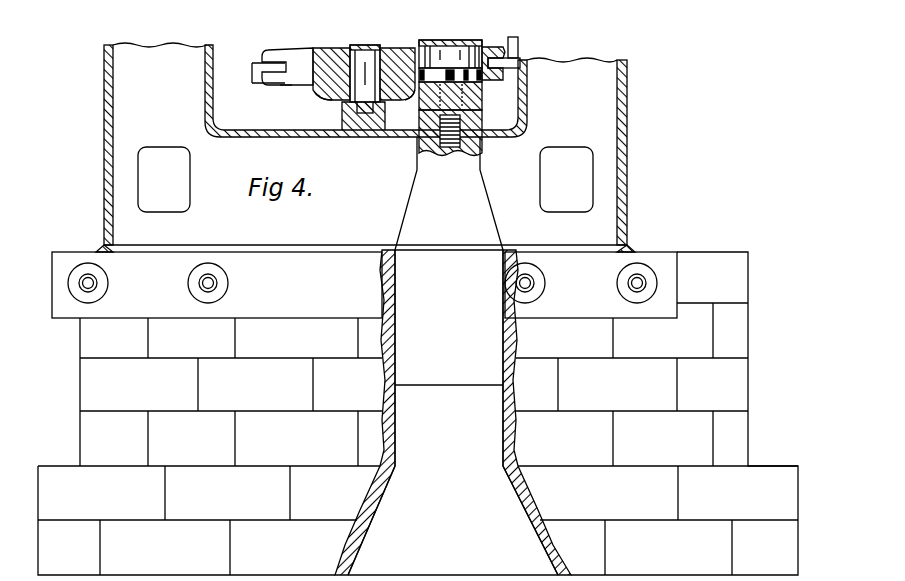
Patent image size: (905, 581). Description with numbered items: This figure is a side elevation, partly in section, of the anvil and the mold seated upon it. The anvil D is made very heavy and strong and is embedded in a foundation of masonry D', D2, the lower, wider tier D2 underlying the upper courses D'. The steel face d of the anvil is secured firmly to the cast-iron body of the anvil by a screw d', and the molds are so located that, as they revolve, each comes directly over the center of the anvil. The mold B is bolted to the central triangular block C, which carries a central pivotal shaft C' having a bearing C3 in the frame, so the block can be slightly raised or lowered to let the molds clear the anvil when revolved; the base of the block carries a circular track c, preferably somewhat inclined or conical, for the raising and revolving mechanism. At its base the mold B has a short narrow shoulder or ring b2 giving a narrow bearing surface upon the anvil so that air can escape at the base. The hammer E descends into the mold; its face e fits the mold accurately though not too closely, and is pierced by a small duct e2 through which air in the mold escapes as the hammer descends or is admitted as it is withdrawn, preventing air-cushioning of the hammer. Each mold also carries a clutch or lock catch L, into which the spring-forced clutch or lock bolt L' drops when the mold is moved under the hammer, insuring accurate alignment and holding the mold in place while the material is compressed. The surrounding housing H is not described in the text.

The frame/housing H is at (365, 147).
The anvil D is at (449, 193).
The foundation of masonry D' is at (419, 412).
The foundation of masonry D2 is at (453, 534).
The clutch or lock catch L is at (391, 79).
The clutch or lock bolt L' is at (539, 58).
The mold B is at (287, 66).
The shoulder or ring b2 is at (286, 86).
The central triangular block C is at (364, 63).
The circular track c is at (320, 97).
The central pivotal shaft C' is at (375, 69).
The bearing C3 is at (352, 120).
The hammer E is at (462, 44).
The face of the hammer e is at (450, 76).
The duct e2 is at (468, 77).
The face of the anvil d is at (461, 98).
The screw d' is at (469, 133).